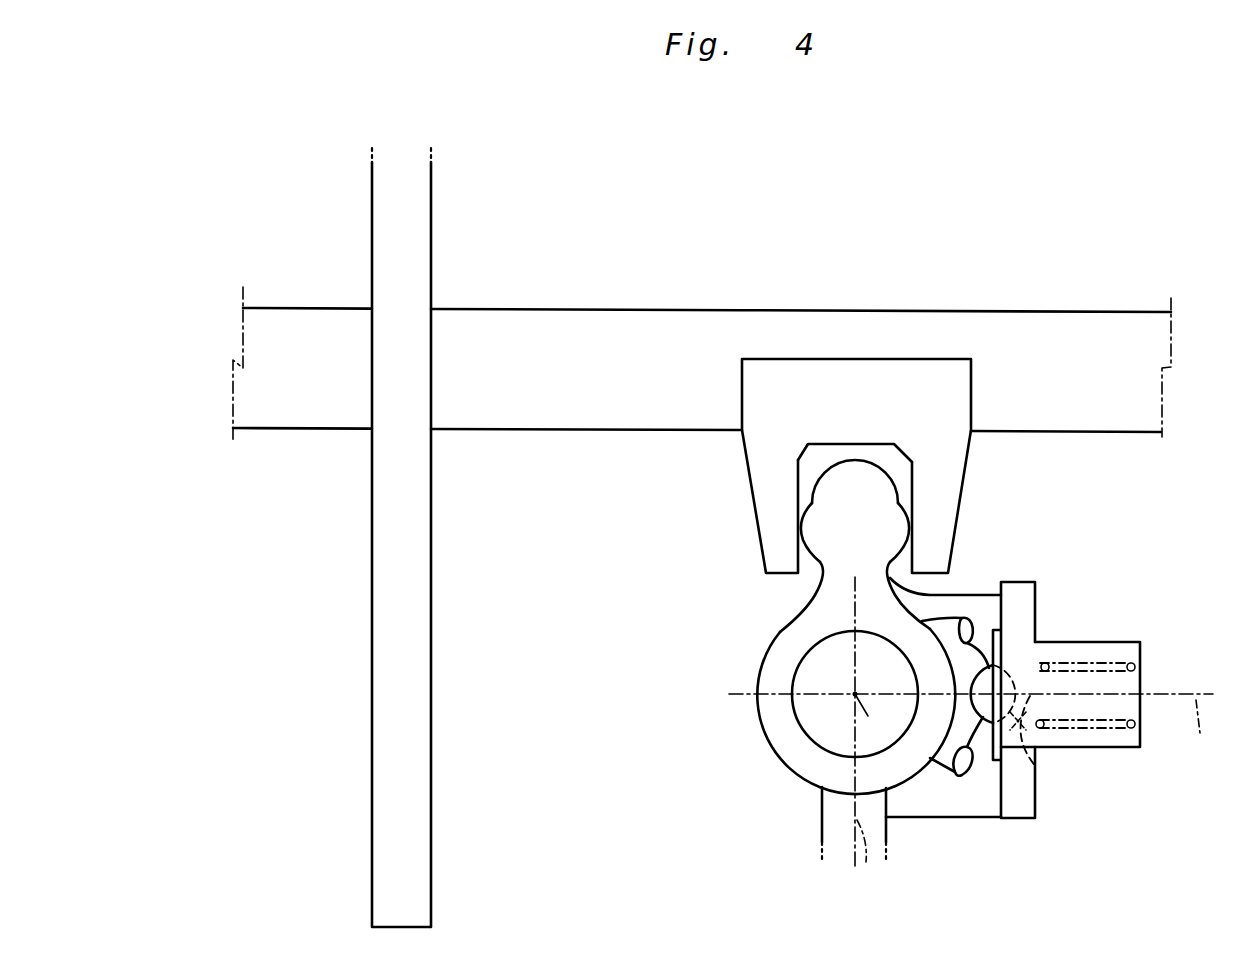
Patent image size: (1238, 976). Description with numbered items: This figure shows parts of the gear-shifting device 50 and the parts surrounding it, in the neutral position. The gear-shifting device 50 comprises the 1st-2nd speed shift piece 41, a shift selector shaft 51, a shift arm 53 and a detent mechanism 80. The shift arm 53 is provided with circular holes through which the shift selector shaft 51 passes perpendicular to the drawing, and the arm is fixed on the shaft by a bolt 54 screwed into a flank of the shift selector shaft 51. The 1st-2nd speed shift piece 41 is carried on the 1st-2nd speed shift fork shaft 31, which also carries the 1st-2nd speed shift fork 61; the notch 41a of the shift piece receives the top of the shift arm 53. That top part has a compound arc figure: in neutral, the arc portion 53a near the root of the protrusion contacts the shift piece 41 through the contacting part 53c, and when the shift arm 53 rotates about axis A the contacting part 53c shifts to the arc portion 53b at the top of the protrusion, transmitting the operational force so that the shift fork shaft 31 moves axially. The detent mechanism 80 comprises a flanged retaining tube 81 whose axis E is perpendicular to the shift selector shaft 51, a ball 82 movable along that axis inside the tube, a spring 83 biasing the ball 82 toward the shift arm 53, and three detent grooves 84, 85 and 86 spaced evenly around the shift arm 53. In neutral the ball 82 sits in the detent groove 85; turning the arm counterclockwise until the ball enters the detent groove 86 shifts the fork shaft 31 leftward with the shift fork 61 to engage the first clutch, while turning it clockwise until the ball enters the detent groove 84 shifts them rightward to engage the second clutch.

The 1st-2nd speed shift fork shaft 31 is at (624, 324).
The 1st-2nd speed shift piece 41 is at (889, 378).
The notch of bracket 41a is at (912, 459).
The gear-shifting device 50 is at (688, 690).
The shift selector shaft 51 is at (832, 720).
The shift arm 53 is at (778, 733).
The arc portion 53a is at (808, 506).
The arc portion 53b is at (803, 458).
The contacting part 53c is at (801, 528).
The bolt 54 is at (837, 833).
The 1st-2nd speed shift fork 61 is at (388, 758).
The detent mechanism 80 is at (1126, 748).
The flanged retaining tube 81 is at (1078, 641).
The ball 82 is at (1038, 767).
The spring 83 is at (1141, 669).
The detent groove 84 is at (968, 620).
The detent groove 85 is at (973, 682).
The detent groove 86 is at (956, 773).